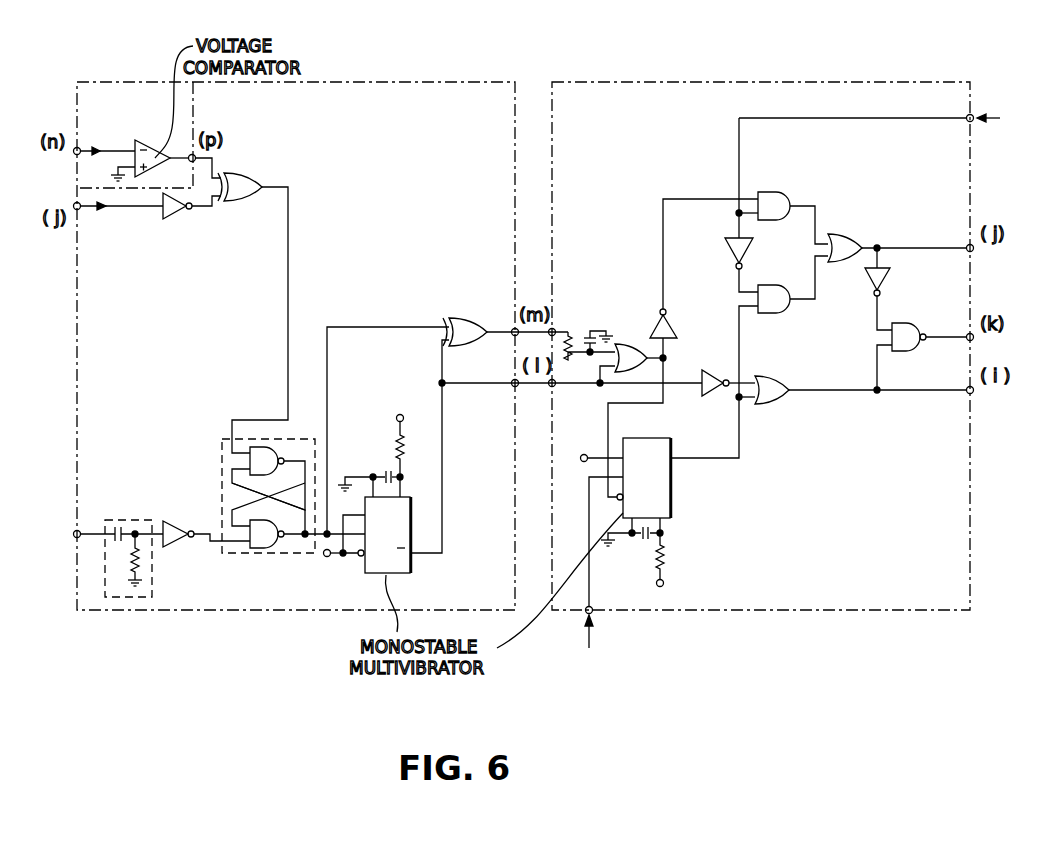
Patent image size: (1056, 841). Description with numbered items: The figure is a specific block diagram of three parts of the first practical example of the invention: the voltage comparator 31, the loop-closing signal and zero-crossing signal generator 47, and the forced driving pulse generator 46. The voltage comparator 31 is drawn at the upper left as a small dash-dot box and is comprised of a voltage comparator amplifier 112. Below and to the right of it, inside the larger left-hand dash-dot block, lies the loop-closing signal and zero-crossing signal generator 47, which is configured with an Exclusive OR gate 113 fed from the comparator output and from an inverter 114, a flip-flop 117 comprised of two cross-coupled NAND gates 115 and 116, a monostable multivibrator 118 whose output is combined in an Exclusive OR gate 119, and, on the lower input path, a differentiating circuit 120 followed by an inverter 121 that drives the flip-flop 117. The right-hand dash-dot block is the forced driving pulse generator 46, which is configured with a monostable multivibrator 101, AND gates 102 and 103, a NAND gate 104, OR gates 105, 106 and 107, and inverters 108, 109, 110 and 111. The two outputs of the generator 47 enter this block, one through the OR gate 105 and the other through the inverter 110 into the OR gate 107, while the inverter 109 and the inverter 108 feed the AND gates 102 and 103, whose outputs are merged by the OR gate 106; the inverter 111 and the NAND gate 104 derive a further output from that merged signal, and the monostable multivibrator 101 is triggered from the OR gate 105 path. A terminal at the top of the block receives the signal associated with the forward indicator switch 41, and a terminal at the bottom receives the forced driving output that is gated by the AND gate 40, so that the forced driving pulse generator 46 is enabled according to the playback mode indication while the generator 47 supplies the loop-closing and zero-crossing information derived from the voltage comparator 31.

The voltage comparator 31 is at (132, 82).
The AND gate 40 is at (590, 641).
The forward indicator switch 41 is at (885, 118).
The forced driving pulse generator 46 is at (788, 612).
The loop-closing signal and zero-crossing signal generator 47 is at (245, 612).
The monostable multivibrator 101 is at (664, 500).
The AND gate 102 is at (777, 195).
The AND gate 103 is at (777, 288).
The NAND gate 104 is at (910, 325).
The OR gate 105 is at (628, 344).
The OR gate 106 is at (850, 238).
The OR gate 107 is at (776, 381).
The inverter 108 is at (733, 255).
The inverter 109 is at (674, 326).
The inverter 110 is at (712, 372).
The inverter 111 is at (891, 280).
The voltage comparator amplifier 112 is at (160, 152).
The Exclusive OR gate 113 is at (246, 178).
The inverter 114 is at (178, 219).
The NAND gate 115 is at (276, 452).
The NAND gate 116 is at (262, 548).
The flip-flop 117 is at (222, 471).
The monostable multivibrator 118 is at (412, 578).
The Exclusive OR gate 119 is at (468, 319).
The differentiating circuit 120 is at (152, 576).
The inverter 121 is at (170, 520).